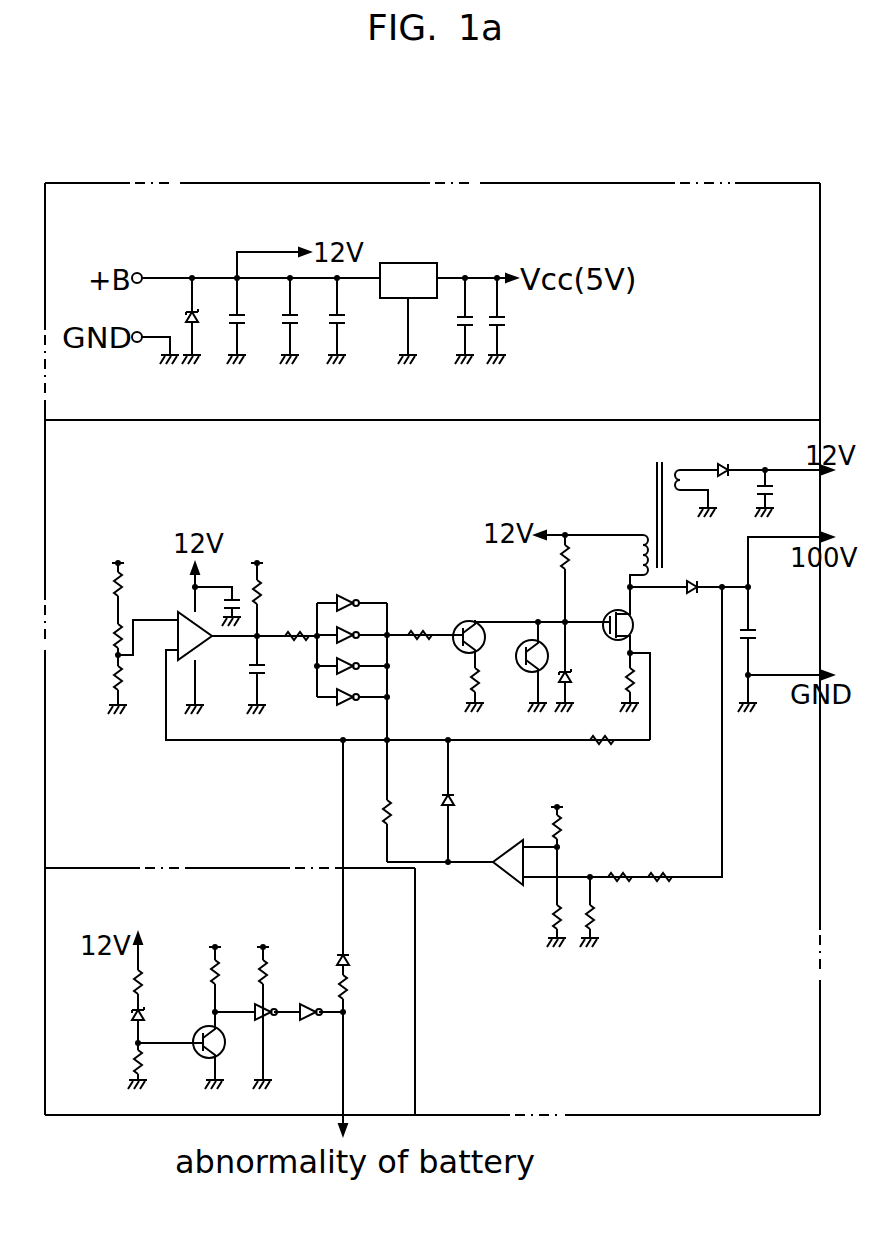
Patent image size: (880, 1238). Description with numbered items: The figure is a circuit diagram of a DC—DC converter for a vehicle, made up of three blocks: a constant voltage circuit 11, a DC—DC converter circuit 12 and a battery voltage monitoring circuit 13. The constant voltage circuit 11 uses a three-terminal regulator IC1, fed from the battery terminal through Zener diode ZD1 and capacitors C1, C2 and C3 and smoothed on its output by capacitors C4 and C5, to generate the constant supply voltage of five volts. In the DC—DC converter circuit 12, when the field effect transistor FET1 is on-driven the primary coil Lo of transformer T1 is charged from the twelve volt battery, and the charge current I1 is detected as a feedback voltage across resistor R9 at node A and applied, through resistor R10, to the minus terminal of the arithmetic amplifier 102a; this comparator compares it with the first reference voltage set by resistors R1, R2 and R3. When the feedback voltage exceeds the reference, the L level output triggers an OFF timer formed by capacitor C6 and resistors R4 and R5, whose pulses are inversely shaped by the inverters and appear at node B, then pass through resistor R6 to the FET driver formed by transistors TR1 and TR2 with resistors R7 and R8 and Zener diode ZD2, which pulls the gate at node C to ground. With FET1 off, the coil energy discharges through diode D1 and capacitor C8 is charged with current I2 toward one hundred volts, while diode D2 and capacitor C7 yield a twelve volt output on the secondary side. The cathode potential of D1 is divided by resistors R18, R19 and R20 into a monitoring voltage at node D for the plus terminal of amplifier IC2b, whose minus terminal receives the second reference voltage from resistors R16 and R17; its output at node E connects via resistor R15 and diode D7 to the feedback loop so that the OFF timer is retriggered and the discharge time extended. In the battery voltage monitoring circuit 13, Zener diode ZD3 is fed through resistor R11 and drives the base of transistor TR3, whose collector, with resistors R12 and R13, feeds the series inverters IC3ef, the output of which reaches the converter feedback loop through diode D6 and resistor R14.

The constant voltage circuit 11 is at (432, 301).
The DC—DC converter circuit 12 is at (432, 767).
The battery voltage monitoring circuit 13 is at (230, 991).
The arithmetic amplifier 102a is at (186, 638).
The resistor R1 is at (99, 591).
The resistor R2 is at (99, 642).
The resistor R3 is at (101, 684).
The resistor R4 is at (273, 598).
The resistor R5 is at (299, 651).
The resistor R6 is at (421, 651).
The resistor R7 is at (461, 689).
The resistor R8 is at (547, 578).
The resistor R9 is at (614, 682).
The resistor R10 is at (607, 756).
The resistor R11 is at (110, 988).
The resistor R12 is at (112, 1066).
The resistor R13 is at (193, 978).
The resistor R14 is at (316, 988).
The resistor R15 is at (412, 801).
The resistor R16 is at (582, 825).
The resistor R17 is at (533, 897).
The resistor R18 is at (614, 912).
The resistor R19 is at (624, 892).
The resistor R20 is at (673, 865).
The capacitor C1 is at (230, 321).
The capacitor C2 is at (280, 321).
The capacitor C3 is at (327, 321).
The capacitor C4 is at (451, 321).
The capacitor C5 is at (513, 321).
The capacitor C6 is at (239, 675).
The capacitor C7 is at (785, 493).
The capacitor C8 is at (769, 649).
The Zener diode ZD1 is at (163, 321).
The Zener diode ZD2 is at (589, 667).
The Zener diode ZD3 is at (108, 1025).
The diode D1 is at (698, 571).
The diode D2 is at (723, 457).
The diode D6 is at (364, 860).
The diode D7 is at (467, 801).
The 3-terminal regulator IC1 is at (408, 297).
The arithmetic amplifier IC2b is at (586, 872).
The inverters IC3ef is at (279, 1030).
The transistor TR1 is at (530, 628).
The transistor TR2 is at (517, 667).
The transistor TR3 is at (188, 1050).
The electric field effect transistor FET1 is at (651, 622).
The transformer T1 is at (682, 502).
The primary coil Lo is at (626, 561).
The node A is at (226, 742).
The node B is at (392, 632).
The node C is at (565, 622).
The node D is at (598, 877).
The node E is at (450, 860).
The charge current I1 is at (609, 582).
The current I2 is at (700, 611).